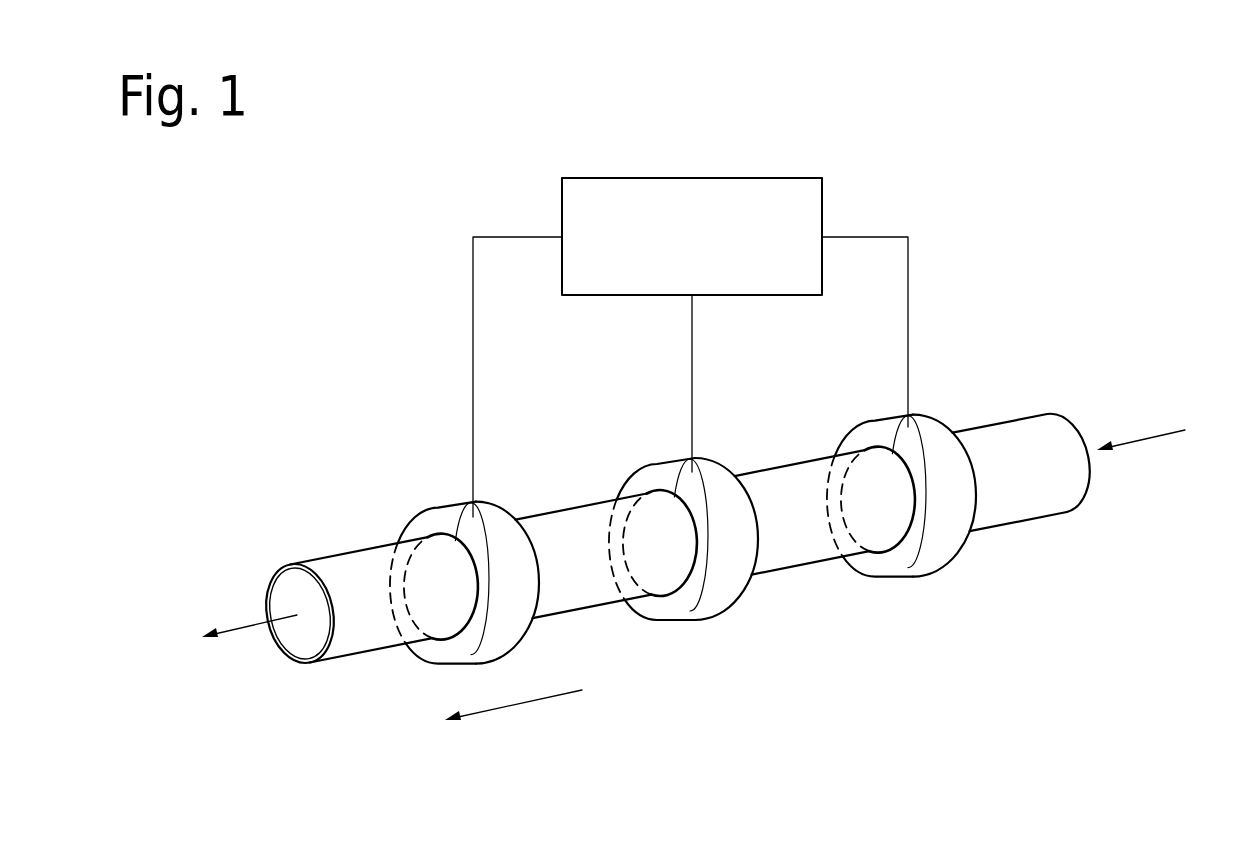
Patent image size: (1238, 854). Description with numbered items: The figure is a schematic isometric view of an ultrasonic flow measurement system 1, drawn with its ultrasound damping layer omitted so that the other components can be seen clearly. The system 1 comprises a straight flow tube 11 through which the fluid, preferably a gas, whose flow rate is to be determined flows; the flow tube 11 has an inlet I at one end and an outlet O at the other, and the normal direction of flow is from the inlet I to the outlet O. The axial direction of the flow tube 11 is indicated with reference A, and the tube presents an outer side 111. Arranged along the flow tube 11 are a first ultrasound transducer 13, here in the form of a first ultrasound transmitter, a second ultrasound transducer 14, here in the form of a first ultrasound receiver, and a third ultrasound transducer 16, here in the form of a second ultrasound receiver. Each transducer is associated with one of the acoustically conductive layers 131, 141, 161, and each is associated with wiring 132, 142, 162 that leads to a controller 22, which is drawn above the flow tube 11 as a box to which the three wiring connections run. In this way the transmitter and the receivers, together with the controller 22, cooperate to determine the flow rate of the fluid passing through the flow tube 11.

The ultrasonic flow measurement system 1 is at (857, 606).
The flow tube 11 is at (674, 541).
The outer side 111 is at (303, 583).
The first ultrasound transducer 13 is at (909, 403).
The acoustically conductive layer 131 is at (868, 462).
The wiring 132 is at (909, 328).
The second ultrasound transducer 14 is at (681, 457).
The acoustically conductive layer 141 is at (651, 501).
The wiring 142 is at (650, 383).
The third ultrasound transducer 16 is at (467, 450).
The acoustically conductive layer 161 is at (425, 547).
The wiring 162 is at (473, 377).
The controller 22 is at (692, 258).
The outlet O is at (249, 606).
The axial direction A is at (513, 689).
The inlet I is at (1141, 422).